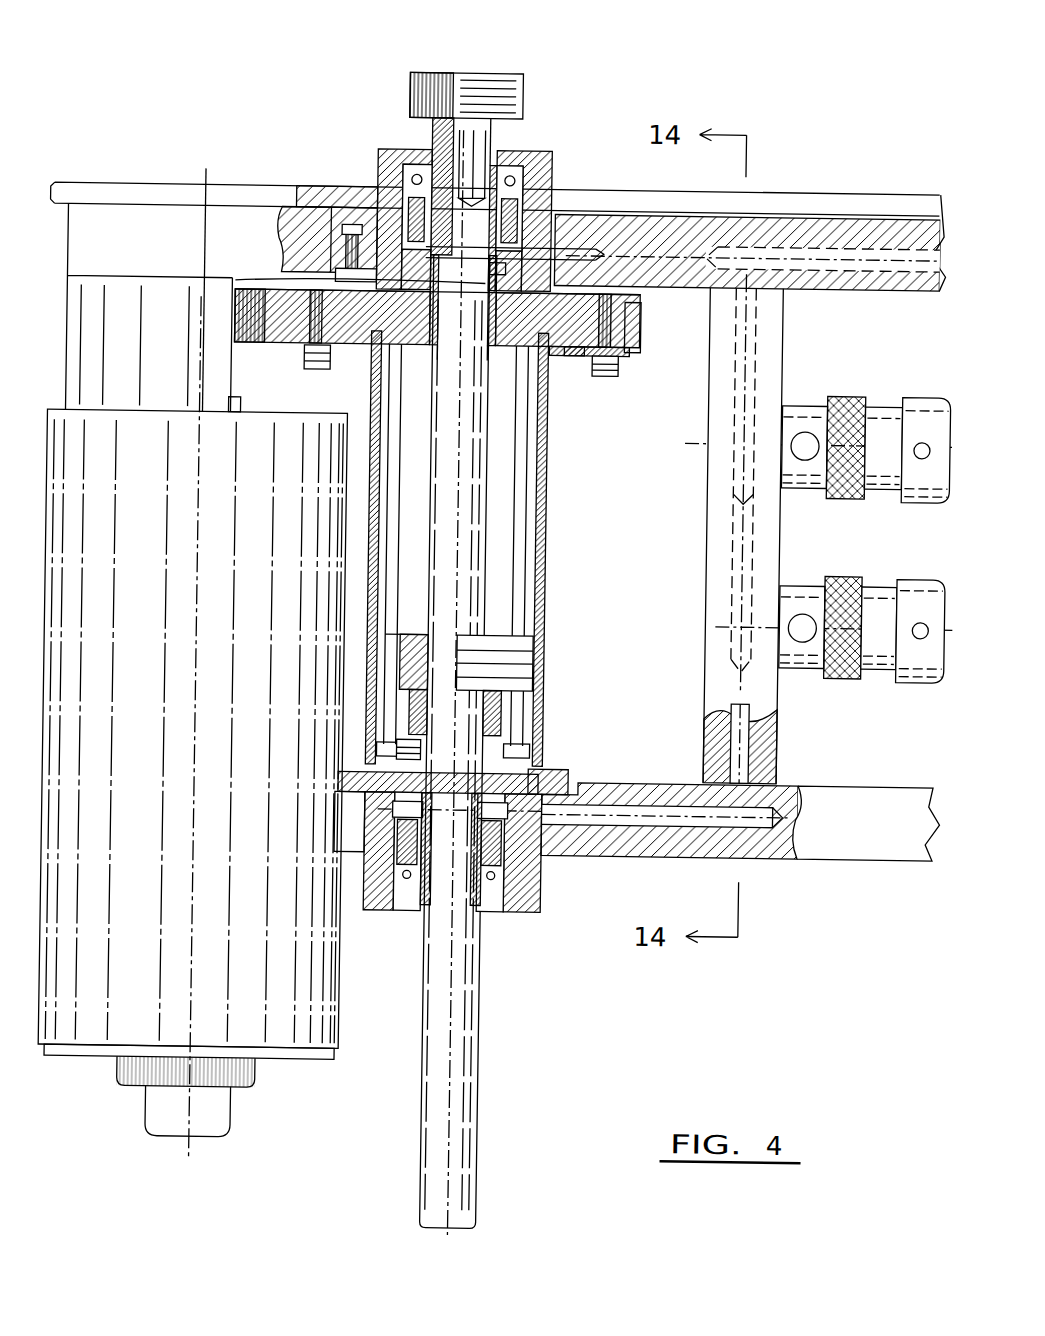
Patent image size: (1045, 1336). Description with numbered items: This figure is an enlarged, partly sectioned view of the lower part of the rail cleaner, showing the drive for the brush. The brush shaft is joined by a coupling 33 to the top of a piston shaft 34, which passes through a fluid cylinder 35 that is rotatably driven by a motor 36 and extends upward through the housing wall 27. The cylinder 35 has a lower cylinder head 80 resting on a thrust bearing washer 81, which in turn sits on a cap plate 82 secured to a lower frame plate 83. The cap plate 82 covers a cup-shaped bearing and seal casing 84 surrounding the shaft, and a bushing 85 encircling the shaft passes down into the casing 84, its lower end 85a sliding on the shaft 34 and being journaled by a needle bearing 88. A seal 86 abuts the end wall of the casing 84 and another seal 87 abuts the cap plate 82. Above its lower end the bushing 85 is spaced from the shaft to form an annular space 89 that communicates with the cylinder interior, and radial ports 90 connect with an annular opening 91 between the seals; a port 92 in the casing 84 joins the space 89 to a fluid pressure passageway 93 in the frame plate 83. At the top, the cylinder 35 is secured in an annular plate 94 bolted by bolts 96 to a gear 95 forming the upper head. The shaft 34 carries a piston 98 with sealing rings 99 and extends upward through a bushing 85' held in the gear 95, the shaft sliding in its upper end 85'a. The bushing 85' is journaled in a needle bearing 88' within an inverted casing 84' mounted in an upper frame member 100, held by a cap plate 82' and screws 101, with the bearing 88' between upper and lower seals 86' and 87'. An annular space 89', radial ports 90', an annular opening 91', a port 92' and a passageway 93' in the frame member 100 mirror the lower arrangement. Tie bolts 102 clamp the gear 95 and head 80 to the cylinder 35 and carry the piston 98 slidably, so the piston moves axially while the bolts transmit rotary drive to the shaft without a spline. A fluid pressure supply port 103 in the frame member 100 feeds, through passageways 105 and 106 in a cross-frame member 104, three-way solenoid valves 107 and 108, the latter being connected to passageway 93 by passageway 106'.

The housing wall 27 is at (818, 200).
The coupling 33 is at (493, 72).
The piston shaft 34 is at (485, 1107).
The fluid cylinder 35 is at (545, 520).
The motor 36 is at (117, 645).
The lower cylinder head 80 is at (528, 735).
The thrust bearing washer 81 is at (539, 765).
The cap plate 82 is at (299, 777).
The cap plate 82' is at (389, 316).
The lower frame plate 83 is at (858, 839).
The bearing and seal casing 84 is at (540, 883).
The inverted cup-shaped casing 84' is at (564, 160).
The bushing 85 is at (525, 687).
The bushing 85' is at (355, 346).
The lower end of bushing 85a is at (424, 832).
The upper end of bushing 85'a is at (464, 281).
The seal 86 is at (472, 896).
The upper seal 86' is at (375, 160).
The seal 87 is at (433, 755).
The lower seal 87' is at (289, 250).
The needle bearing 88 is at (532, 853).
The needle bearing 88' is at (566, 170).
The annular space 89 is at (428, 683).
The annular space 89' is at (466, 335).
The radial ports 90 is at (468, 798).
The radial ports 90' is at (475, 288).
The annular opening 91 is at (327, 850).
The annular opening 91' is at (368, 182).
The port 92 is at (663, 849).
The port 92' is at (523, 199).
The fluid pressure passageway 93 is at (670, 772).
The fluid pressure passageway 93' is at (663, 315).
The annular plate 94 is at (569, 353).
The gear 95 is at (635, 329).
The bolts 96 is at (602, 369).
The piston 98 is at (534, 637).
The sealing rings 99 is at (533, 665).
The upper frame member 100 is at (137, 226).
The screws 101 is at (364, 216).
The tie bolts 102 is at (390, 483).
The fluid pressure supply port 103 is at (874, 242).
The cross-frame member 104 is at (718, 480).
The passageway 105 is at (753, 361).
The passageway 106 is at (694, 480).
The passageway 106' is at (785, 744).
The 3-way solenoid valve 107 is at (875, 403).
The 3-way solenoid valve 108 is at (803, 646).